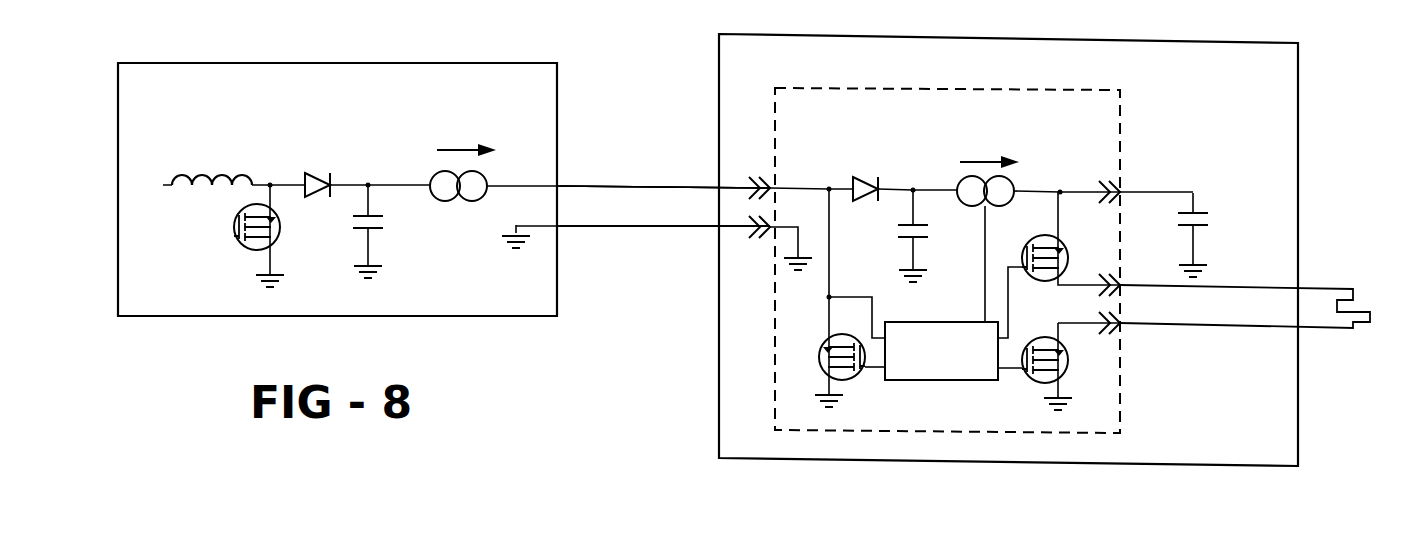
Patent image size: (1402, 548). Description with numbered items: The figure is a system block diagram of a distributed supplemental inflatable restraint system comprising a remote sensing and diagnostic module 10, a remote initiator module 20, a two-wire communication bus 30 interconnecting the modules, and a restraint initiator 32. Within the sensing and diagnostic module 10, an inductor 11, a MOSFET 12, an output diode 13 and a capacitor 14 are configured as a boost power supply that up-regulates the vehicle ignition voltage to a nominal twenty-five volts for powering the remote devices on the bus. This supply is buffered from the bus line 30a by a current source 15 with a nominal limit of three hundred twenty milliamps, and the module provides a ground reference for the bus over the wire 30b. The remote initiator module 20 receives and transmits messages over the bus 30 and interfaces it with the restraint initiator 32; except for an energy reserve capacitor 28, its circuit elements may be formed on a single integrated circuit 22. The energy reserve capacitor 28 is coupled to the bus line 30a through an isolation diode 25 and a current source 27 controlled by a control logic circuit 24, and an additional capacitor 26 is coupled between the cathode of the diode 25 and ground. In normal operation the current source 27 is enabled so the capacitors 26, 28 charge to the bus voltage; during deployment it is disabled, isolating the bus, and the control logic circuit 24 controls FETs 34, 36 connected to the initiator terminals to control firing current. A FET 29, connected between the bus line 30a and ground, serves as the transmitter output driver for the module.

The sensing and diagnostic module 10 is at (558, 91).
The inductor 11 is at (193, 173).
The MOSFET 12 is at (241, 243).
The output diode 13 is at (318, 173).
The capacitor 14 is at (375, 230).
The current source 15 is at (463, 201).
The remote initiator module 20 is at (718, 86).
The integrated circuit 22 is at (1122, 410).
The control logic circuit 24 is at (948, 381).
The isolation diode 25 is at (866, 177).
The capacitor 26 is at (920, 240).
The current source 27 is at (1015, 181).
The energy reserve capacitor 28 is at (1205, 214).
The FET 29 is at (820, 351).
The two-wire communication bus 30 is at (605, 262).
The bus line 30a is at (666, 187).
The wire 30b is at (692, 227).
The restraint initiator 32 is at (1370, 300).
The FET 34 is at (1069, 250).
The FET 36 is at (1068, 370).